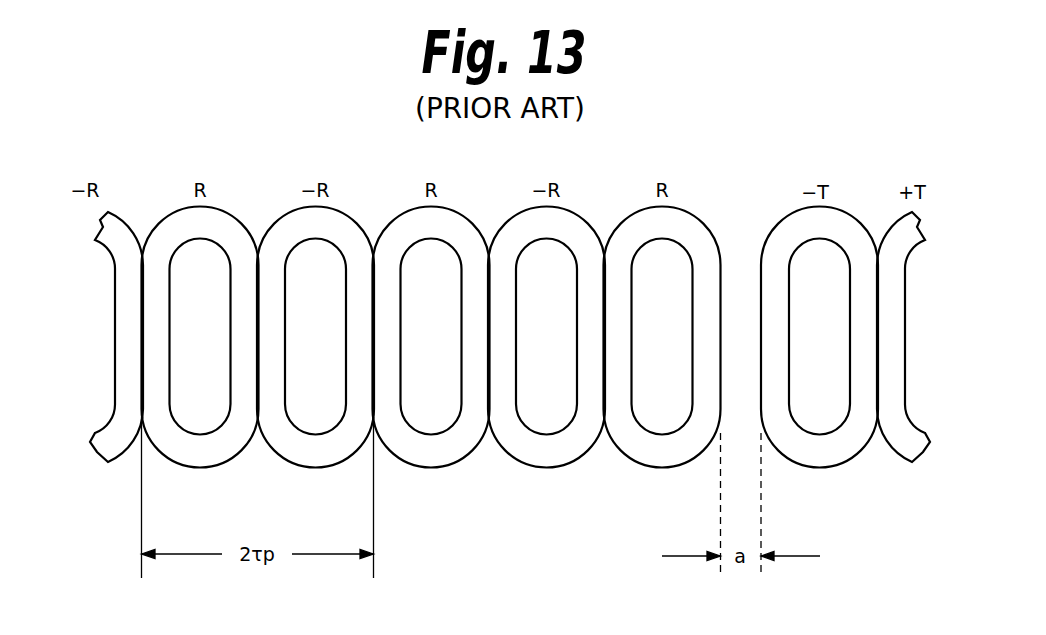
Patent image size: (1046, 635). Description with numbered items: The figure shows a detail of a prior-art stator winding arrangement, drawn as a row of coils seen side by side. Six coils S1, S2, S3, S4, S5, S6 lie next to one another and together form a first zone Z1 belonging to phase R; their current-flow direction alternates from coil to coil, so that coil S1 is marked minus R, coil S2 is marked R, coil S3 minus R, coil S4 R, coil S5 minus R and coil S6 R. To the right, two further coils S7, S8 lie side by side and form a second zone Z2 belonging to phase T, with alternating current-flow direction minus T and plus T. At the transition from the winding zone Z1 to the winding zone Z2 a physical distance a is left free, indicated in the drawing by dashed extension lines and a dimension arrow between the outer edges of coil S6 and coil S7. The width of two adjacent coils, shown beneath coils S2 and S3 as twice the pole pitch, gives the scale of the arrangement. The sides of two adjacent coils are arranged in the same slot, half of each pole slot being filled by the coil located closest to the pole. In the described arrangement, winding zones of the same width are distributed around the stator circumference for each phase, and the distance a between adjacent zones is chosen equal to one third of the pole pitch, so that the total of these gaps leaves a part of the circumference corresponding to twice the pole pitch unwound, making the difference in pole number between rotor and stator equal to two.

The coil S1 is at (107, 337).
The coil S2 is at (200, 337).
The coil S3 is at (315, 337).
The coil S4 is at (431, 337).
The coil S5 is at (546, 337).
The coil S6 is at (662, 337).
The coil S7 is at (819, 337).
The coil S8 is at (912, 337).
The first zone Z1 is at (372, 165).
The second zone Z2 is at (869, 167).